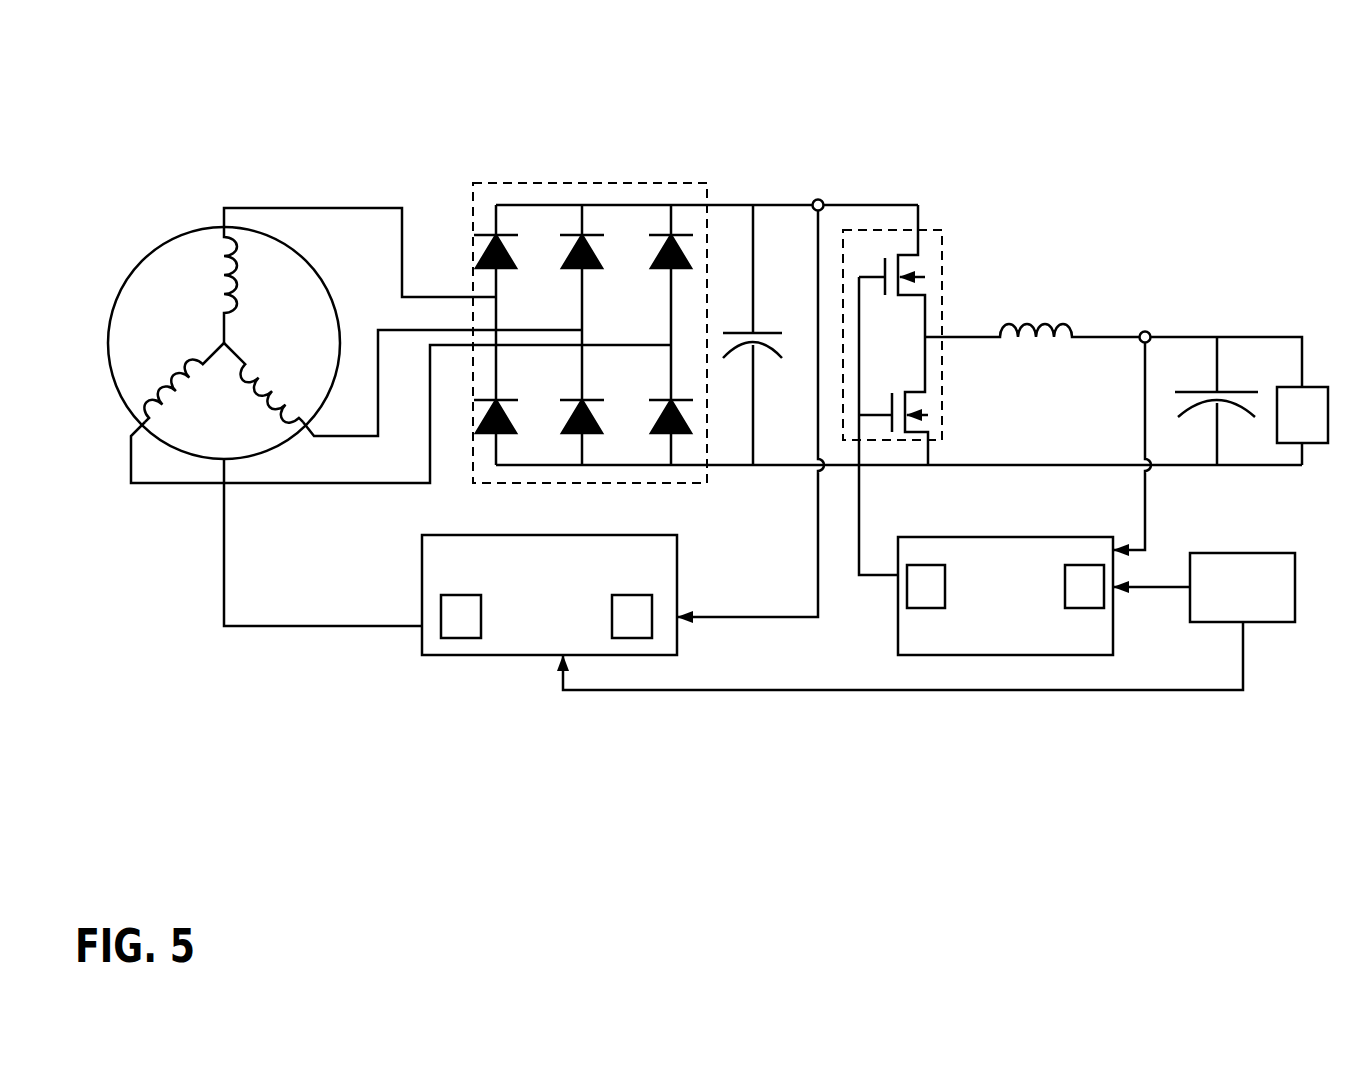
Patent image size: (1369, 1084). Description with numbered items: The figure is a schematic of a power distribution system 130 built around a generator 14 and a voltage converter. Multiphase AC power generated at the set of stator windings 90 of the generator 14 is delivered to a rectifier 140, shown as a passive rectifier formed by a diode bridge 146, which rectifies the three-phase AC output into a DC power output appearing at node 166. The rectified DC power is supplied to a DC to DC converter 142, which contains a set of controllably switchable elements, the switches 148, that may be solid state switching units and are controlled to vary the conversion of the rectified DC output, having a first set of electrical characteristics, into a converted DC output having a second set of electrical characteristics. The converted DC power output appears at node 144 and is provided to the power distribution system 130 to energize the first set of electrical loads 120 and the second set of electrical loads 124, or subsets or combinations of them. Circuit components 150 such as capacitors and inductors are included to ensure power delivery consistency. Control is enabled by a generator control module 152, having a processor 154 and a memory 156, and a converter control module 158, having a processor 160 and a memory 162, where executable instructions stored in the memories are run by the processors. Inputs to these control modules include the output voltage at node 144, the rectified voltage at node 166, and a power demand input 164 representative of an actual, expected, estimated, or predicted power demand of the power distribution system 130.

The generator 14 is at (121, 252).
The set of stator windings 90 is at (169, 336).
The first set of electrical loads 120 is at (1302, 415).
The second set of electrical loads 124 is at (1302, 415).
The power distribution system 130 is at (464, 66).
The rectifier 140 is at (543, 184).
The DC to DC converter 142 is at (886, 229).
The node 144 is at (1148, 329).
The diode bridge 146 is at (590, 199).
The switches 148 is at (933, 413).
The circuit components 150 is at (770, 240).
The generator control module 152 is at (566, 641).
The processor 154 is at (474, 630).
The memory 156 is at (645, 630).
The converter control module 158 is at (1084, 648).
The processor 160 is at (940, 599).
The memory 162 is at (1098, 599).
The power demand input 164 is at (1258, 552).
The node 166 is at (820, 198).